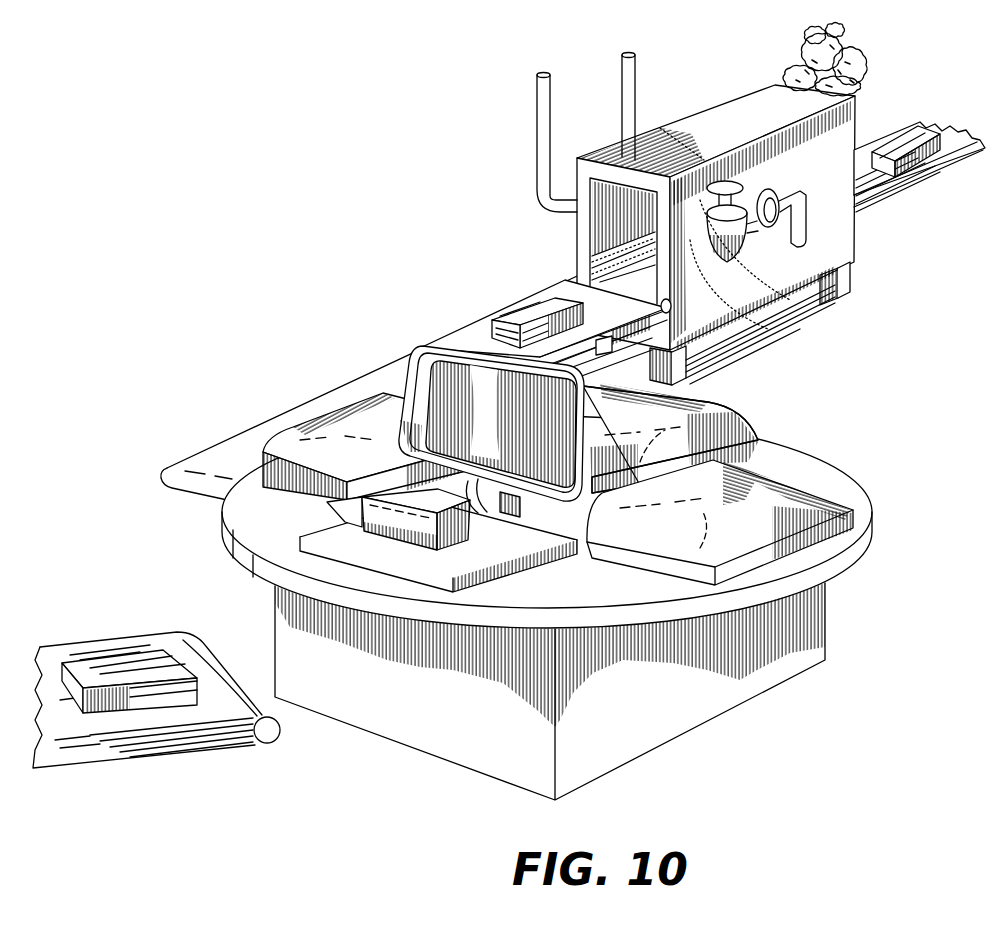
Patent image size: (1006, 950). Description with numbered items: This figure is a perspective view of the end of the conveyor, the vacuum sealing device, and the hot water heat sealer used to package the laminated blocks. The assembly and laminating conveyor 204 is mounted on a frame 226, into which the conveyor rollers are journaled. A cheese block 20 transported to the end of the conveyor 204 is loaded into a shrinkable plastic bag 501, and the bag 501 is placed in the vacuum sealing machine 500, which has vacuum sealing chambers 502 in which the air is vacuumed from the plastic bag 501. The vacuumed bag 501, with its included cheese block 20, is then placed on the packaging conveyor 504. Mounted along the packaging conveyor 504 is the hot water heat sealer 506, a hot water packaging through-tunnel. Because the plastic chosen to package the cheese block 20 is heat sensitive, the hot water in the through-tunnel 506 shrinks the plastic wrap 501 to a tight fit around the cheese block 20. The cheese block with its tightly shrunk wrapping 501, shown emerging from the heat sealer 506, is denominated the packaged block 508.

The cheese block 20 is at (513, 305).
The assembly and laminating conveyor 204 is at (252, 745).
The frame 226 is at (931, 182).
The vacuum sealing machine 500 is at (858, 560).
The shrinkable plastic bag 501 is at (328, 504).
The vacuum sealing chambers 502 is at (293, 412).
The packaging conveyor 504 is at (346, 381).
The hot water heat sealer 506 is at (748, 98).
The packaged block 508 is at (927, 132).